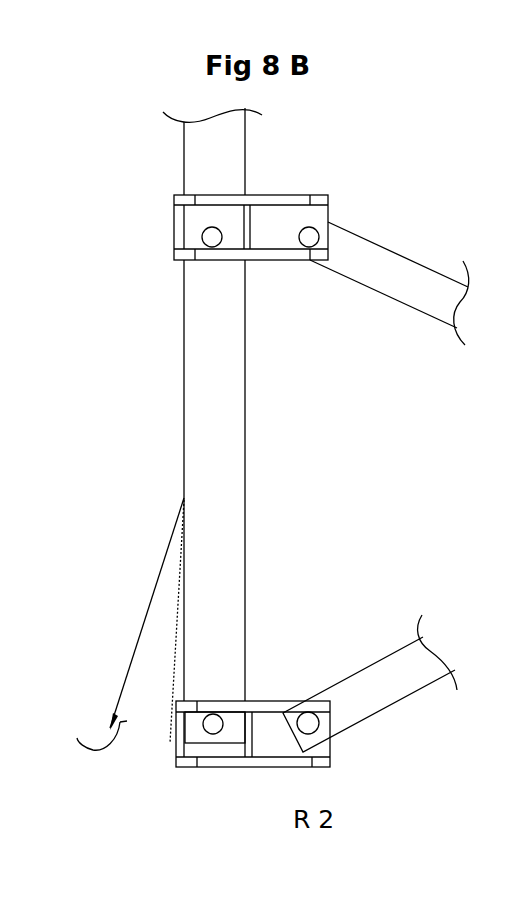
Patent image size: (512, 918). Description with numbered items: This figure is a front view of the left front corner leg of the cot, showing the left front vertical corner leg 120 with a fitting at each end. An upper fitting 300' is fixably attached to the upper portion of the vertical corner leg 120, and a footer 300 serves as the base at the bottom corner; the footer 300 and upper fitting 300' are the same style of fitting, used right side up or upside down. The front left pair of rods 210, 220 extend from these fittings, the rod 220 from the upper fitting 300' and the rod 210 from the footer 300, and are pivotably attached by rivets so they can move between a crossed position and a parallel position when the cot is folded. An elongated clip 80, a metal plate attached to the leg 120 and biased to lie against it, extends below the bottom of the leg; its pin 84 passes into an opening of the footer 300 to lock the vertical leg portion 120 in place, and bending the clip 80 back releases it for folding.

The left front vertical corner leg 120 is at (220, 155).
The upper fitting 300' is at (184, 202).
The footer 300 is at (244, 768).
The rod 220 is at (407, 275).
The rod 210 is at (400, 677).
The clip 80 is at (138, 635).
The pin 84 is at (91, 732).